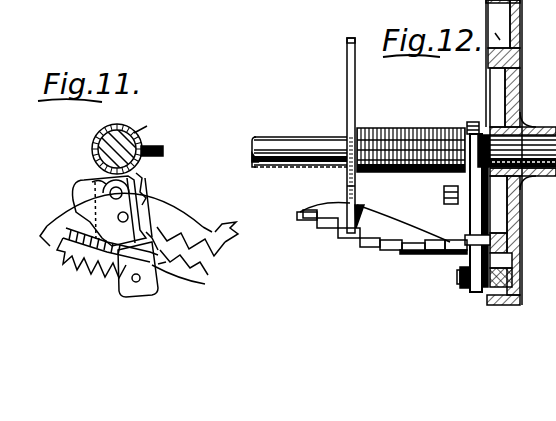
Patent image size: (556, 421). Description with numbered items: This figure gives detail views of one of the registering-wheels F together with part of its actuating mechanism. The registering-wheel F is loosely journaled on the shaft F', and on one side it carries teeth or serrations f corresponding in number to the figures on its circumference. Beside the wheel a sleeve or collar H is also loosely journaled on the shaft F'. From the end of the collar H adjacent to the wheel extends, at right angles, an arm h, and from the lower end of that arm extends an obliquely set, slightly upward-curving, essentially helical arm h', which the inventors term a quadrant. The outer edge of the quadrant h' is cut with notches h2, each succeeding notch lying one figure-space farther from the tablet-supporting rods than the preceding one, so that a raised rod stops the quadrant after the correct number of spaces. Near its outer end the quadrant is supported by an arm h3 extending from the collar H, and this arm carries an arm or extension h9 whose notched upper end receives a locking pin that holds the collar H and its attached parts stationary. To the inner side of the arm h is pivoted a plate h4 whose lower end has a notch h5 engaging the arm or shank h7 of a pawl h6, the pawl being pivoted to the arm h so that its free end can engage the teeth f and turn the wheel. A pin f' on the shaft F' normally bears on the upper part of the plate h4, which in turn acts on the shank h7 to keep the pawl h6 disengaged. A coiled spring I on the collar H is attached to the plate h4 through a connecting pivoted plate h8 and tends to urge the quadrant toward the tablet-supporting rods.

In FIG. 12, the registering-wheel F is at (521, 161).
In FIG. 11, the shaft F' is at (149, 126).
In FIG. 12, the shaft F' is at (404, 139).
In FIG. 11, the teeth or serrations f is at (225, 229).
In FIG. 12, the teeth or serrations f is at (511, 144).
In FIG. 11, the pin f' is at (157, 148).
In FIG. 11, the sleeve or collar H is at (92, 147).
In FIG. 12, the sleeve or collar H is at (468, 127).
In FIG. 11, the coiled spring I is at (110, 131).
In FIG. 12, the coiled spring I is at (383, 131).
In FIG. 11, the arm h is at (124, 219).
In FIG. 12, the arm h is at (473, 204).
In FIG. 11, the quadrant h' is at (135, 256).
In FIG. 12, the quadrant h' is at (382, 228).
In FIG. 11, the notches h2 is at (164, 235).
In FIG. 12, the notches h2 is at (305, 216).
In FIG. 12, the arm h3 is at (348, 184).
In FIG. 11, the pivoted plate h4 is at (146, 204).
In FIG. 12, the notch h5 is at (495, 232).
In FIG. 11, the pawl h6 is at (170, 267).
In FIG. 12, the pawl h6 is at (512, 277).
In FIG. 11, the arm or shank h7 is at (110, 262).
In FIG. 12, the arm or shank h7 is at (478, 252).
In FIG. 11, the connecting pivoted device or plate h8 is at (92, 182).
In FIG. 12, the connecting pivoted device or plate h8 is at (444, 198).
In FIG. 12, the arm or extension h9 is at (350, 72).